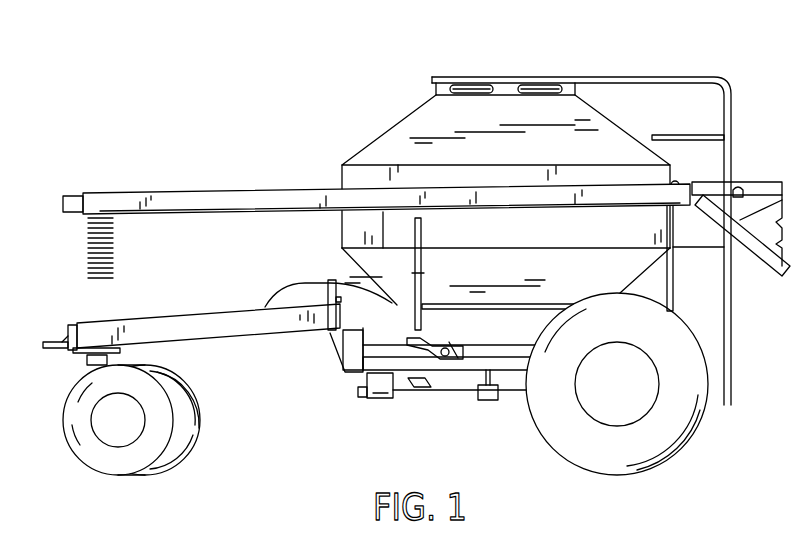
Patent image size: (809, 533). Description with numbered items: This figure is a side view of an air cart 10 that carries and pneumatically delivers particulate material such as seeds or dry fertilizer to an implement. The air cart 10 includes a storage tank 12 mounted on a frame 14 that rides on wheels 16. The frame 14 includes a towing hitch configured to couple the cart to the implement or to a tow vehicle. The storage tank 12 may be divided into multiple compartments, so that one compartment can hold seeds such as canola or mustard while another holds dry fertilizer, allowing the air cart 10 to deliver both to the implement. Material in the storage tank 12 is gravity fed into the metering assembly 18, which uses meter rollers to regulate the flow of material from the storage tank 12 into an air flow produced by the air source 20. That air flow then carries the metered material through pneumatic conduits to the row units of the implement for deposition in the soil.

The air cart 10 is at (330, 84).
The storage tank 12 is at (418, 113).
The frame 14 is at (197, 313).
The wheels 16 is at (78, 461).
The metering assembly 18 is at (462, 359).
The air source 20 is at (280, 291).